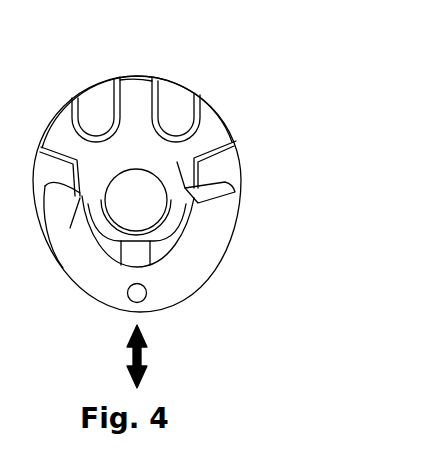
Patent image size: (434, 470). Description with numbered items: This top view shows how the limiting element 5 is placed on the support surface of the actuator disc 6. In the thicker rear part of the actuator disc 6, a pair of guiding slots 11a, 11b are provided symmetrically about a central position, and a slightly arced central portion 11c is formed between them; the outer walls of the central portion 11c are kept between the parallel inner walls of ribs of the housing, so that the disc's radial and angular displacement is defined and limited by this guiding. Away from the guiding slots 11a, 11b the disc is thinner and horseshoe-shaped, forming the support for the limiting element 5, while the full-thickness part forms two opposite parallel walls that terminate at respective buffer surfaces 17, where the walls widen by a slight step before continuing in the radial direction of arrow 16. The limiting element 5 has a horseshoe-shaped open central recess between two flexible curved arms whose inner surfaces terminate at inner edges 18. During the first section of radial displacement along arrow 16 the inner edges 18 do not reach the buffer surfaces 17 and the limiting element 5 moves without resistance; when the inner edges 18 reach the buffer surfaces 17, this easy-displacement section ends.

The limiting element 5 is at (207, 238).
The actuator disc 6 is at (208, 135).
The guiding slot 11a is at (98, 118).
The guiding slot 11b is at (177, 112).
The central portion 11c is at (132, 107).
The arrow 16 is at (157, 353).
The buffer surface 17 is at (180, 160).
The inner edge 18 is at (215, 196).